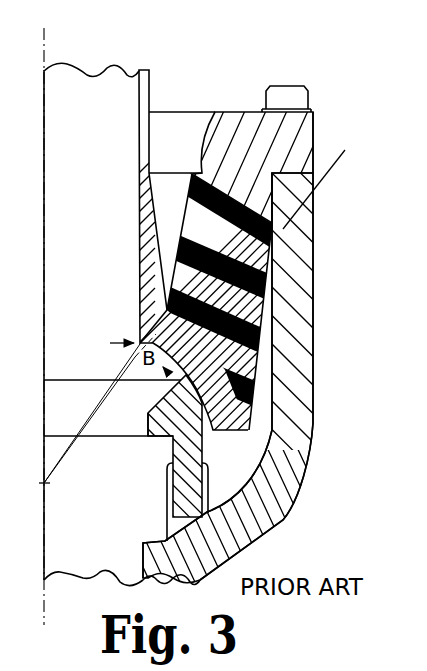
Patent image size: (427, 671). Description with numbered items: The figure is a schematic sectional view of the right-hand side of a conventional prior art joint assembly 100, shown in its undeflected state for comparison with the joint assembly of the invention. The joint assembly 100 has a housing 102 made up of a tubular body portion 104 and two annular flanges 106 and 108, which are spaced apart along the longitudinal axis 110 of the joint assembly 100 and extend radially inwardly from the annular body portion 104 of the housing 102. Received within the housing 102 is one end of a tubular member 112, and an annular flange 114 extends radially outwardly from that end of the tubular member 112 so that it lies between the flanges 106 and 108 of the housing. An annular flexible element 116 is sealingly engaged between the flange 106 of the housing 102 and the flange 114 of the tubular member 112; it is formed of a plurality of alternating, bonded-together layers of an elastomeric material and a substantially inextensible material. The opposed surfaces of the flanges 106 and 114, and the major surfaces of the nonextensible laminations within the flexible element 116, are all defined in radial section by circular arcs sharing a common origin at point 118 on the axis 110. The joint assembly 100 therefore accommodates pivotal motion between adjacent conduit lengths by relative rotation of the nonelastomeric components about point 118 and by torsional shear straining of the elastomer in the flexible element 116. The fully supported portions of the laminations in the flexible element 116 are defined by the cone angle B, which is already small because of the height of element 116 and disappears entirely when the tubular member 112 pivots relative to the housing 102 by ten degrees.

The joint assembly 100 is at (205, 77).
The housing 102 is at (318, 302).
The tubular body portion 104 is at (306, 216).
The annular flange 106 is at (283, 144).
The annular flange 108 is at (278, 510).
The longitudinal axis 110 is at (44, 40).
The tubular member 112 is at (138, 216).
The annular flange 114 is at (207, 378).
The flexible element 116 is at (253, 264).
The point 118 is at (46, 486).